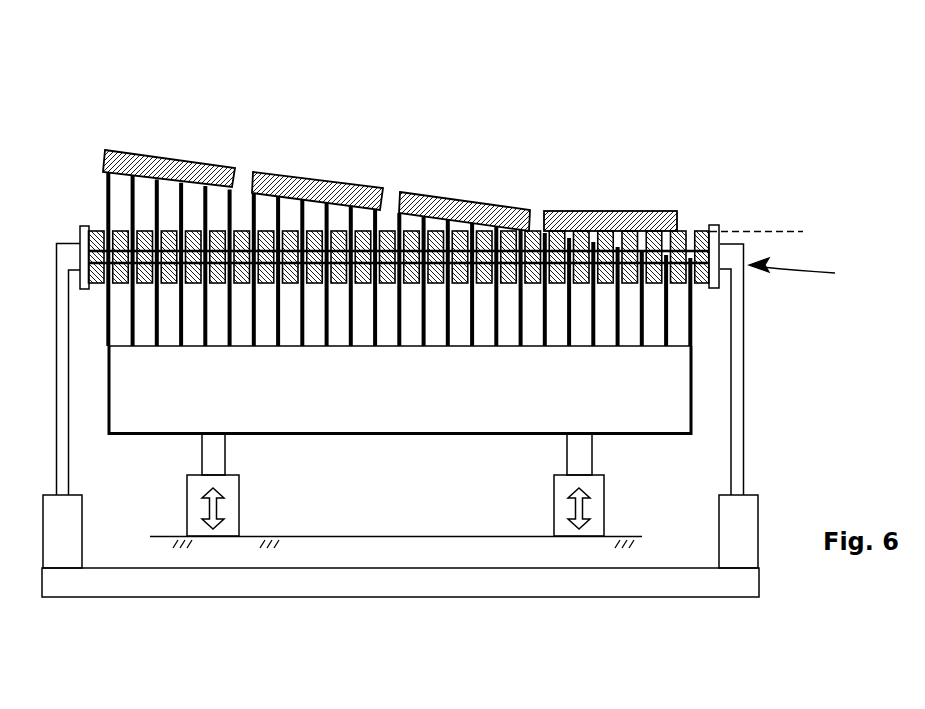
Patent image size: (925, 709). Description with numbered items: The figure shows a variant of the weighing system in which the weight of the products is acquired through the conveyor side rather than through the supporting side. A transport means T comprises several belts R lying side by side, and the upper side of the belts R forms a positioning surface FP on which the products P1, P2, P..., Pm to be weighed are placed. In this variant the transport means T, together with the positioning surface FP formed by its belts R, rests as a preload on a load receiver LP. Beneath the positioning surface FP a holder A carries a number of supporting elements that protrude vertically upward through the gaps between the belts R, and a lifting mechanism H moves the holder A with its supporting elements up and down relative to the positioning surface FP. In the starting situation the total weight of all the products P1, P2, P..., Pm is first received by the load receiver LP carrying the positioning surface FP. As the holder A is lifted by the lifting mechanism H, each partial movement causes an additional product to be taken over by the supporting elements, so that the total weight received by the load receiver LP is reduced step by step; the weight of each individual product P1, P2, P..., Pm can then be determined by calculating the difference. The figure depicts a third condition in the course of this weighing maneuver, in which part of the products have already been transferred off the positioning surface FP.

The product P1 is at (167, 173).
The product P2 is at (287, 173).
The product P... is at (458, 199).
The product Pm is at (600, 211).
The belt R is at (705, 232).
The positioning surface FP is at (780, 228).
The transport means T is at (803, 273).
The holder A is at (386, 396).
The lifting mechanism H is at (558, 493).
The load receiver LP is at (352, 582).